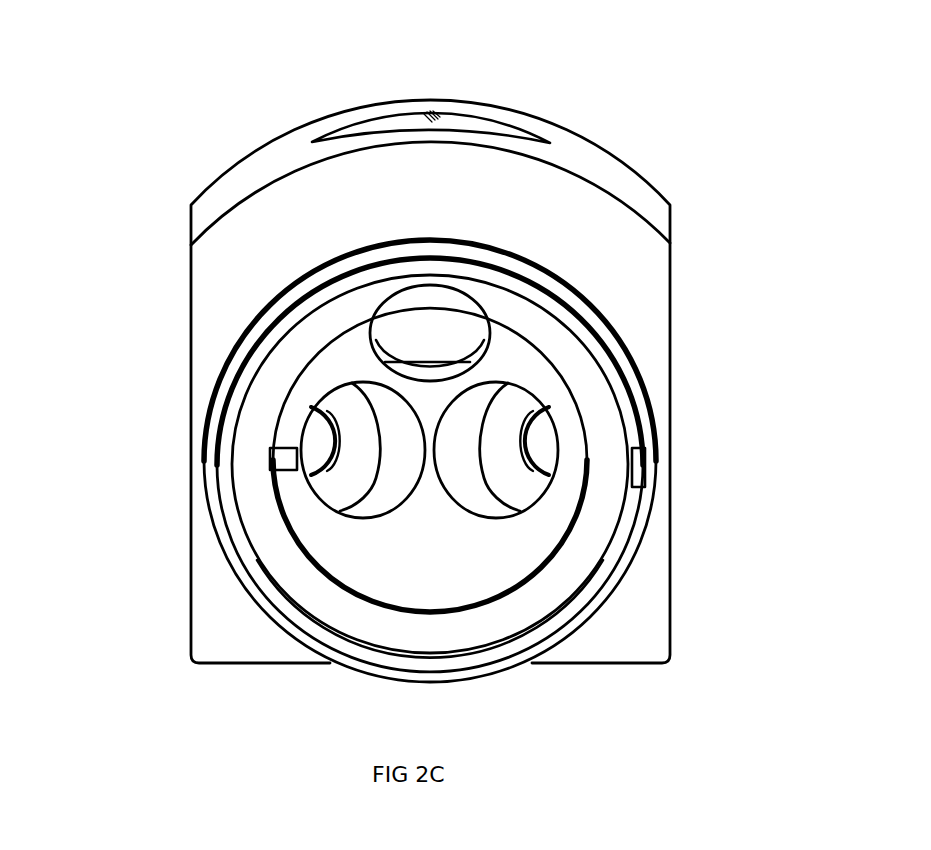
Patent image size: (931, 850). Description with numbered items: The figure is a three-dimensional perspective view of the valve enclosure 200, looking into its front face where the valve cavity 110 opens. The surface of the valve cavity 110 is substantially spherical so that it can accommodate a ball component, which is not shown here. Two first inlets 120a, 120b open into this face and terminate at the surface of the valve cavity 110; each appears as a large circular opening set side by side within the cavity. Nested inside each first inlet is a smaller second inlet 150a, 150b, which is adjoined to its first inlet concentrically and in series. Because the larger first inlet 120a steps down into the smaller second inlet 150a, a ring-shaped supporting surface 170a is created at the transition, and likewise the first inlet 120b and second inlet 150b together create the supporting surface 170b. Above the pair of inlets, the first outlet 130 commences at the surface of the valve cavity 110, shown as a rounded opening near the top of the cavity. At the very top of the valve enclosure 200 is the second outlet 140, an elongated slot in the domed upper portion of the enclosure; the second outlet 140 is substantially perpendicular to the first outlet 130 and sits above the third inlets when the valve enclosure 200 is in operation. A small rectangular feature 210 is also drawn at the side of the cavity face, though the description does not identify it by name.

The valve enclosure 200 is at (145, 108).
The valve cavity 110 is at (452, 553).
The first inlet 120a is at (390, 478).
The first inlet 120b is at (541, 407).
The first outlet 130 is at (452, 353).
The second outlet 140 is at (413, 122).
The second inlet 150a is at (327, 437).
The second inlet 150b is at (535, 436).
The supporting surface 170a is at (398, 412).
The supporting surface 170b is at (493, 458).
The indicator window 210 is at (289, 470).